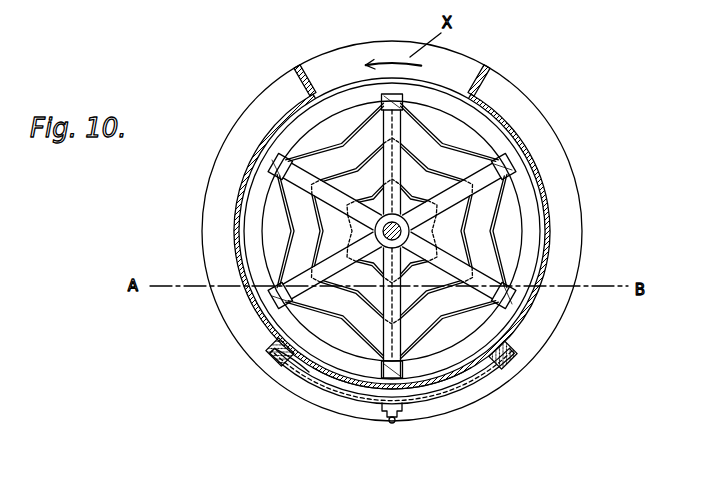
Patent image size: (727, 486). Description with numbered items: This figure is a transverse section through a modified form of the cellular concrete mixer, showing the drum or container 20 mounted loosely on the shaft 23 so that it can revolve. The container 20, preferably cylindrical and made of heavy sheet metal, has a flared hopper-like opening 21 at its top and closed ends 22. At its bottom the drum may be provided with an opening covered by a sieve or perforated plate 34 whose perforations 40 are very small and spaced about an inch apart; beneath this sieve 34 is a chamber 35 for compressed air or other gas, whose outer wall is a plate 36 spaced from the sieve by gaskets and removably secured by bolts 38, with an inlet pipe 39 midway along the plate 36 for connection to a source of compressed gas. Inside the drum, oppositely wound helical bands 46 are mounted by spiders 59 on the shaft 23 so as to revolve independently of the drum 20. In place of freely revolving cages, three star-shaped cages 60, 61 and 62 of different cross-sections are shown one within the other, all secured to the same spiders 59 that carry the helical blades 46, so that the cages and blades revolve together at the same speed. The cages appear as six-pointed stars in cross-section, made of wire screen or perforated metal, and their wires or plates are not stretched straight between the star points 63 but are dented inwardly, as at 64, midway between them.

The container 20 is at (537, 162).
The hopper-like opening 21 is at (486, 82).
The closed ends 22 is at (249, 116).
The shaft 23 is at (386, 242).
The sieve 34 is at (360, 404).
The chamber 35 is at (308, 380).
The plate 36 is at (282, 372).
The bolts 38 is at (512, 361).
The inlet pipe 39 is at (393, 421).
The perforations 40 is at (462, 380).
The helical bands 46 is at (480, 120).
The spiders 59 is at (508, 288).
The star-shaped cage 60 is at (500, 192).
The star-shaped cage 61 is at (476, 218).
The star-shaped cage 62 is at (434, 236).
The star points 63 is at (290, 228).
The inward dent 64 is at (356, 166).